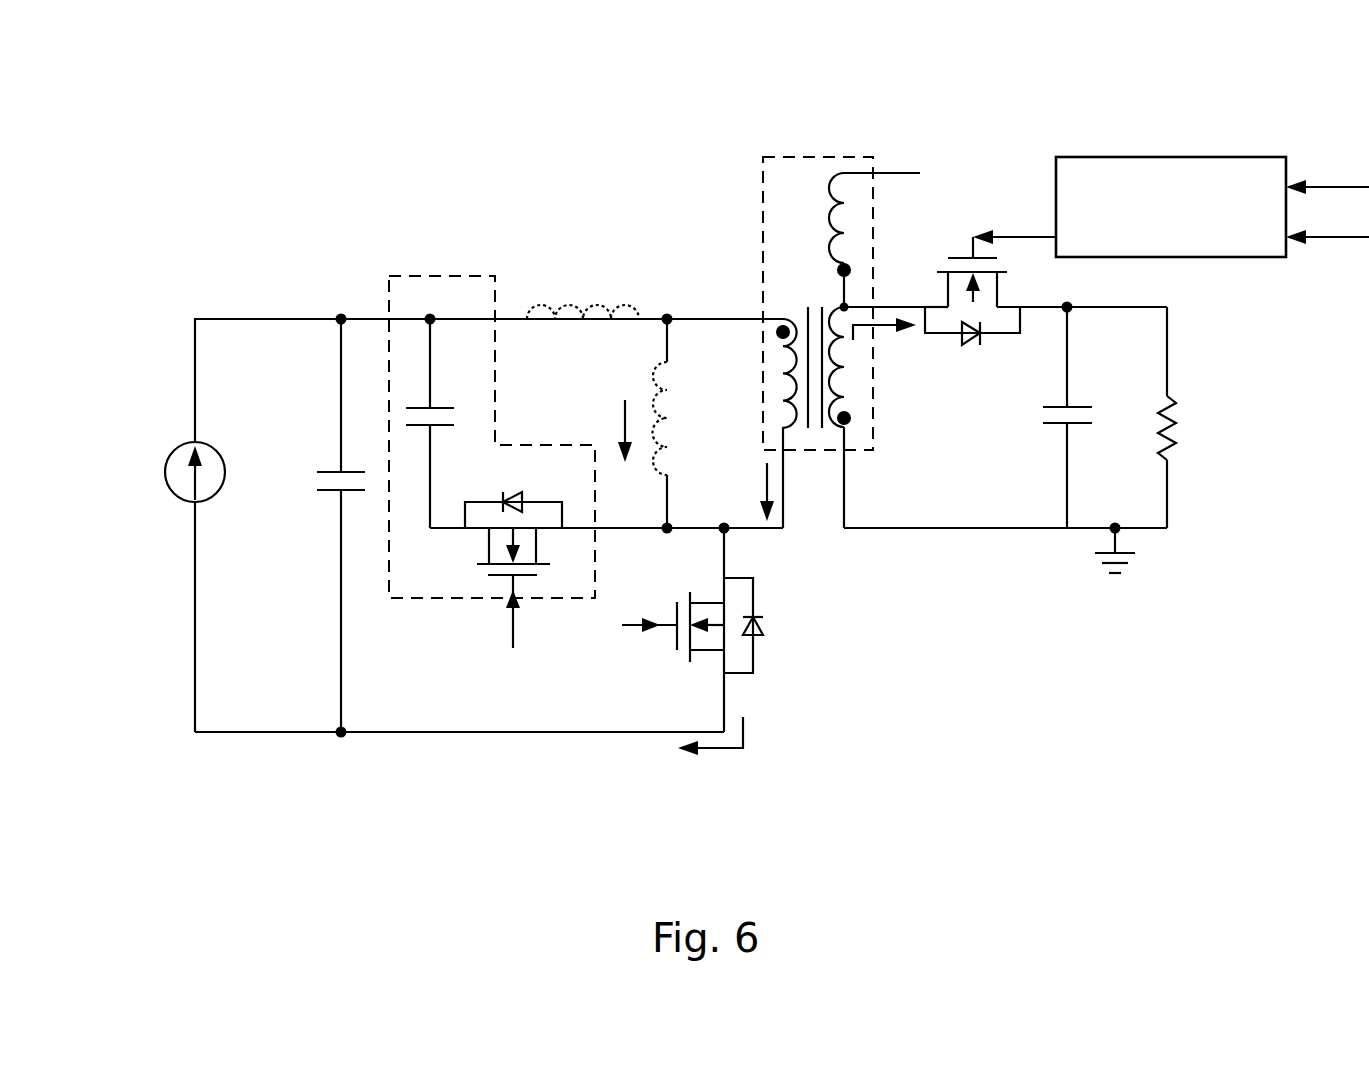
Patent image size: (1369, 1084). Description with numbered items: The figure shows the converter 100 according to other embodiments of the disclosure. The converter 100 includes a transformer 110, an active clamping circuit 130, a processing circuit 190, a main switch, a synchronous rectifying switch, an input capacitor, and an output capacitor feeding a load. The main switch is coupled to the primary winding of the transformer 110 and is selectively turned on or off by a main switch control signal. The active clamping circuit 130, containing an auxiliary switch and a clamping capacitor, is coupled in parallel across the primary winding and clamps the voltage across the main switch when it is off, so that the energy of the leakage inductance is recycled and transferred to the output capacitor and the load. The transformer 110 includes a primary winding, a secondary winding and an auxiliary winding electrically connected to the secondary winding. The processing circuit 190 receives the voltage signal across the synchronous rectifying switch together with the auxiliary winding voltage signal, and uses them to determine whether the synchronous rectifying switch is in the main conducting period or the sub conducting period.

The converter 100 is at (70, 66).
The transformer 110 is at (762, 244).
The active clamping circuit 130 is at (465, 275).
The processing circuit 190 is at (1190, 222).